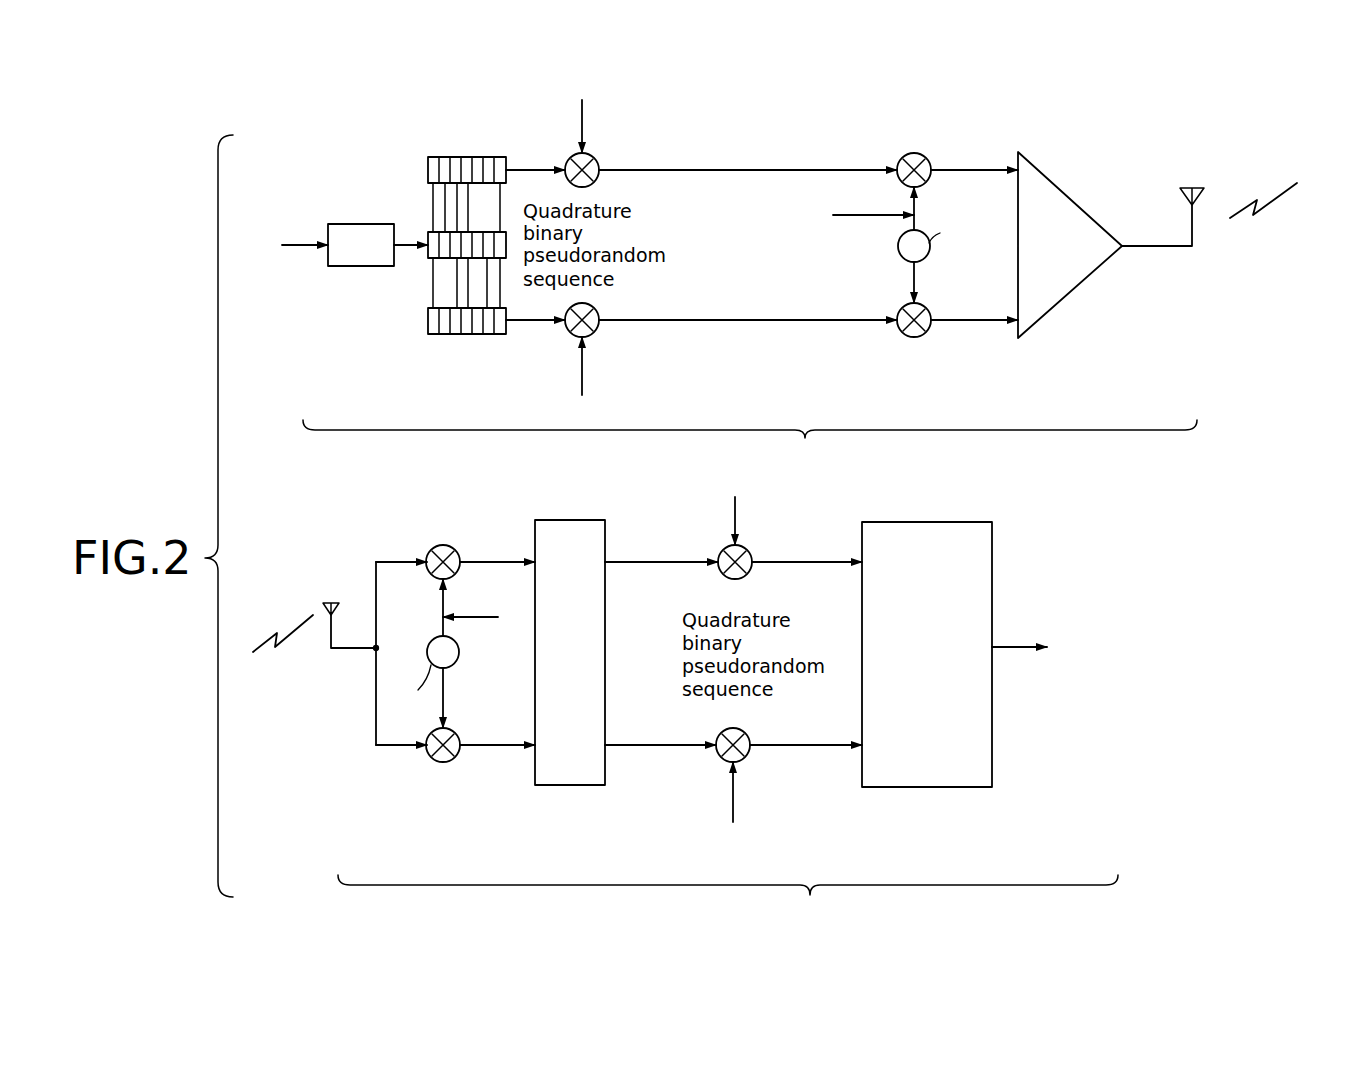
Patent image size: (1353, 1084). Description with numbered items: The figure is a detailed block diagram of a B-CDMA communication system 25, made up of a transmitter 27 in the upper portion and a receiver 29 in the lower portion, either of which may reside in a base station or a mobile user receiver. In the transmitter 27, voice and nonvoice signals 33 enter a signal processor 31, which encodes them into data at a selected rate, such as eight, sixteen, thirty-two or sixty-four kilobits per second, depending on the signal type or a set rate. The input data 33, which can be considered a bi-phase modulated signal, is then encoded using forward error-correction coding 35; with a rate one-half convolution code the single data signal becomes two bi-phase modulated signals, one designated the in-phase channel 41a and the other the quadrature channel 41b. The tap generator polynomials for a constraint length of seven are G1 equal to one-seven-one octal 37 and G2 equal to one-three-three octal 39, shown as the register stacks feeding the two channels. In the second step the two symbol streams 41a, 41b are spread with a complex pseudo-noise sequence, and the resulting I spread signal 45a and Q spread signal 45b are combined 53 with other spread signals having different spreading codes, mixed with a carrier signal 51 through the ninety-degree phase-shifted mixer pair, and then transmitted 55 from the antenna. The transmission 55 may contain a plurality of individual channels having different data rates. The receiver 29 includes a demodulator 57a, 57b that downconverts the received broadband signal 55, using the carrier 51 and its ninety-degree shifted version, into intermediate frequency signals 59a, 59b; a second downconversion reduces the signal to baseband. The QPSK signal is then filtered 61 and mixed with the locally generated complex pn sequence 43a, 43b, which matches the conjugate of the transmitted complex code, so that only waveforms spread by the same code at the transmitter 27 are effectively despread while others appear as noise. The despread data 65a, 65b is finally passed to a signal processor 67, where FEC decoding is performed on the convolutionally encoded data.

The CDMA communication system 25 is at (1270, 483).
The transmitter 27 is at (750, 435).
The receiver 29 is at (728, 893).
The signal processor 31 is at (360, 268).
The voice and nonvoice signals 33 is at (290, 238).
The forward error-correction coding 35 is at (426, 253).
The tap generator polynomial G1 37 is at (427, 167).
The tap generator polynomial G2 39 is at (427, 320).
The in-phase (I) channel 41a is at (533, 163).
The quadrature (Q) channel 41b is at (528, 327).
The locally generated complex pn sequence (I) 43a is at (592, 124).
The locally generated complex pn sequence (Q) 43b is at (592, 372).
The I spread signal 45a is at (727, 163).
The Q spread signal 45b is at (716, 327).
The carrier signal 51 is at (872, 221).
The combiner 53 is at (1066, 297).
The transmitted broadband signal 55 is at (1283, 193).
The demodulator (I) 57a is at (441, 545).
The demodulator (Q) 57b is at (432, 759).
The intermediate frequency signal (I) 59a is at (487, 555).
The intermediate frequency signal (Q) 59b is at (498, 752).
The filter 61 is at (570, 786).
The despread data (I) 65a is at (815, 555).
The despread data (Q) 65b is at (789, 752).
The signal processor 67 is at (930, 788).